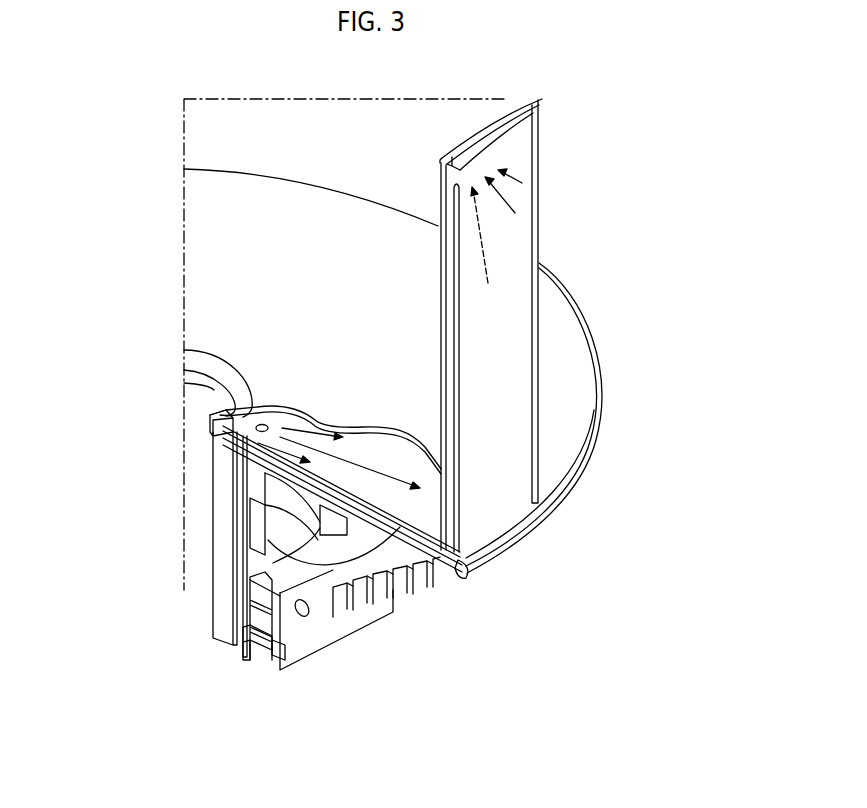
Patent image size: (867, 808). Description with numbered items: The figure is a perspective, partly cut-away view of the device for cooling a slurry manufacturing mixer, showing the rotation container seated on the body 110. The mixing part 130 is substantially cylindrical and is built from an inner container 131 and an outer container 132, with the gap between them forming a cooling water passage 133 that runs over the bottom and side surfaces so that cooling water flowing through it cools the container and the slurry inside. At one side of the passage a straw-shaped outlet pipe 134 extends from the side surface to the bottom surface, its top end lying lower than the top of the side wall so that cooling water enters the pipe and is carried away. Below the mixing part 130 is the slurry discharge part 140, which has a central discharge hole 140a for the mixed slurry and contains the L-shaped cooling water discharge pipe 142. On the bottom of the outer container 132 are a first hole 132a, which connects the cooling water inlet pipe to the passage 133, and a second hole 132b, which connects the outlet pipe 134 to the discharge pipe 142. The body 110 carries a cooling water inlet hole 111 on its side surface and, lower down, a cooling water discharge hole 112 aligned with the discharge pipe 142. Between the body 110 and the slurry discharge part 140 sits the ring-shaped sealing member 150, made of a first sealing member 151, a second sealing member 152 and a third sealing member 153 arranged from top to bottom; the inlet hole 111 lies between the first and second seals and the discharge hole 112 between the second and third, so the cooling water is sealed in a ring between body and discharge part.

The body 110 is at (298, 642).
The cooling water inlet hole 111 is at (310, 612).
The cooling water discharge hole 112 is at (277, 652).
The mixing part 130 is at (650, 488).
The inner container 131 is at (473, 510).
The outer container 132 is at (550, 470).
The first hole 132a is at (250, 403).
The second hole 132b is at (230, 440).
The cooling water passage 133 is at (512, 507).
The outlet pipe 134 is at (466, 580).
The slurry discharge part 140 is at (225, 488).
The discharge hole 140a is at (197, 458).
The cooling water discharge pipe 142 is at (240, 518).
The sealing member 150 is at (93, 587).
The first sealing member 151 is at (260, 593).
The second sealing member 152 is at (250, 618).
The third sealing member 153 is at (230, 648).